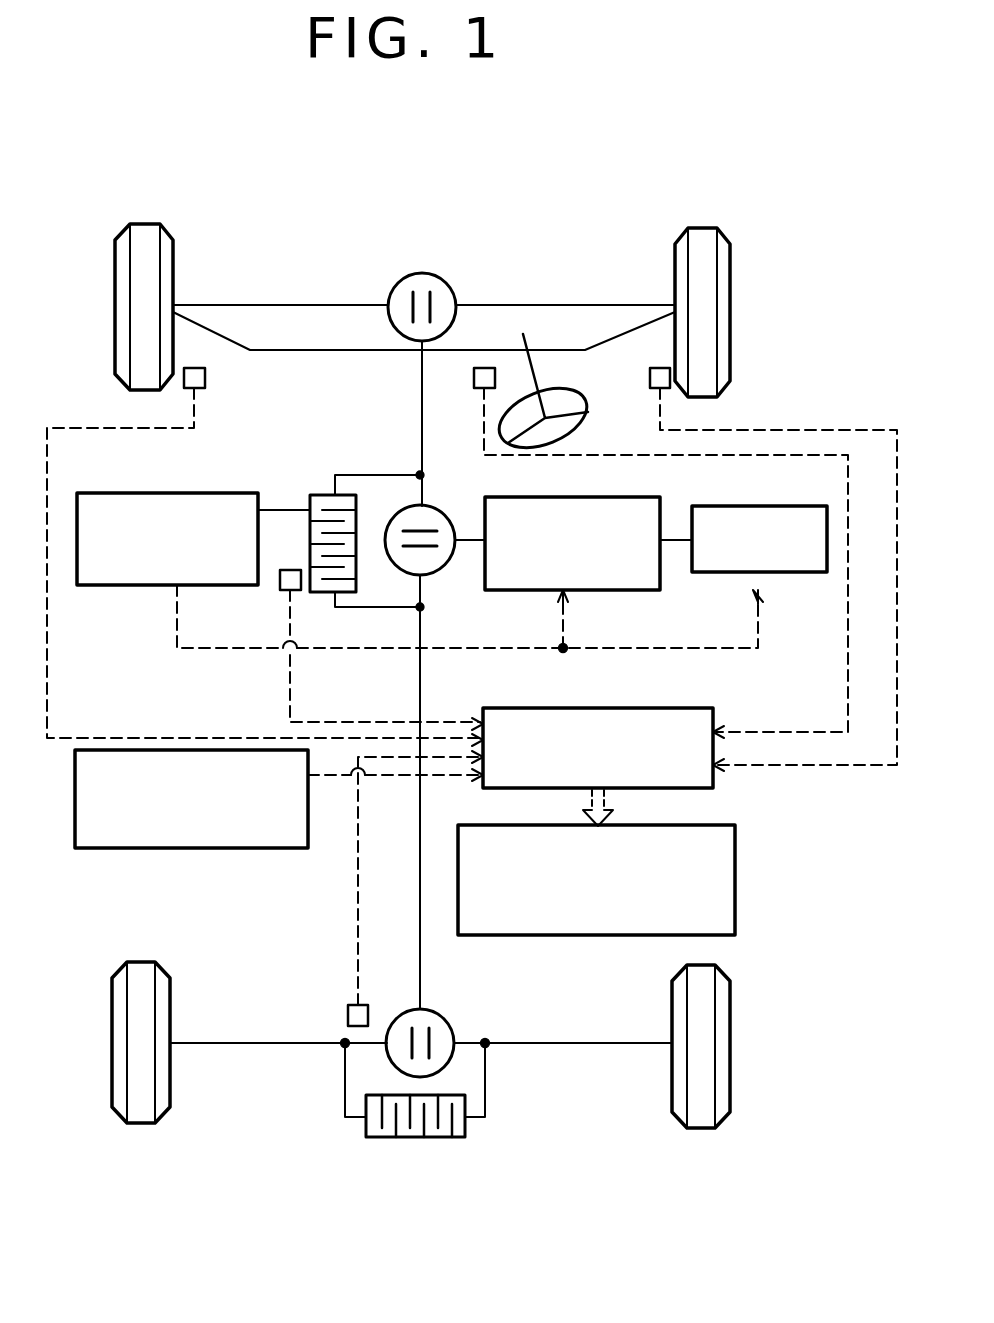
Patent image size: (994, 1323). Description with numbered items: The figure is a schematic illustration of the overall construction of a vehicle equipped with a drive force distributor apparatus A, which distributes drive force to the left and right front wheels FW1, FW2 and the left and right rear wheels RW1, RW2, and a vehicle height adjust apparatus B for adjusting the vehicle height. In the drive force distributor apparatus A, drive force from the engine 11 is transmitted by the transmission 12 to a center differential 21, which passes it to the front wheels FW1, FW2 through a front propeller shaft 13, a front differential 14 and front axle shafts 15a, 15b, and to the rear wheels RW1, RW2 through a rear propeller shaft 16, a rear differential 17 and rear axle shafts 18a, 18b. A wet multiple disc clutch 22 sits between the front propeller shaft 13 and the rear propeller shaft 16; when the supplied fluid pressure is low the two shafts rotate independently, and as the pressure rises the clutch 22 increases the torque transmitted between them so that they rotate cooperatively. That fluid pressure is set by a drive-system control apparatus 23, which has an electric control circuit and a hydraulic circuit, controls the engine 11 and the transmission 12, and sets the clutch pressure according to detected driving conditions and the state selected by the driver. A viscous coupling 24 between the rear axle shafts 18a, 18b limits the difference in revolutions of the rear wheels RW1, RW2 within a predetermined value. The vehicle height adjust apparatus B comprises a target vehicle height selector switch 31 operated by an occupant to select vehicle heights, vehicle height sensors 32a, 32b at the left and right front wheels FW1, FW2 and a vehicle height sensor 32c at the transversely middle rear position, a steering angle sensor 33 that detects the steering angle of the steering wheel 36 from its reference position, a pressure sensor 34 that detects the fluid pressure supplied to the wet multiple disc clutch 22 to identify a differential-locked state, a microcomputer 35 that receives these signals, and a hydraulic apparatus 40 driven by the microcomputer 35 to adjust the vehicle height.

The left front wheel FW1 is at (150, 222).
The right front wheel FW2 is at (706, 228).
The left rear wheel RW1 is at (143, 1126).
The right rear wheel RW2 is at (700, 1131).
The engine 11 is at (758, 506).
The transmission 12 is at (641, 498).
The front propeller shaft 13 is at (418, 428).
The front differential 14 is at (440, 275).
The front axle shaft 15a is at (308, 305).
The front axle shaft 15b is at (566, 305).
The rear propeller shaft 16 is at (420, 676).
The rear differential 17 is at (447, 1010).
The rear axle shaft 18a is at (266, 1046).
The rear axle shaft 18b is at (602, 1046).
The center differential 21 is at (441, 520).
The wet multiple disc clutch 22 is at (330, 496).
The drive-system control apparatus 23 is at (198, 493).
The viscous coupling 24 is at (420, 1140).
The target vehicle height selector switch 31 is at (262, 850).
The vehicle height sensor 32a is at (206, 378).
The vehicle height sensor 32b is at (648, 388).
The vehicle height sensor 32c is at (348, 1008).
The steering angle sensor 33 is at (473, 381).
The pressure sensor 34 is at (298, 592).
The microcomputer 35 is at (618, 708).
The steering wheel 36 is at (580, 410).
The hydraulic apparatus 40 is at (738, 897).
The drive force distributor apparatus A is at (746, 661).
The vehicle height adjust apparatus B is at (757, 792).